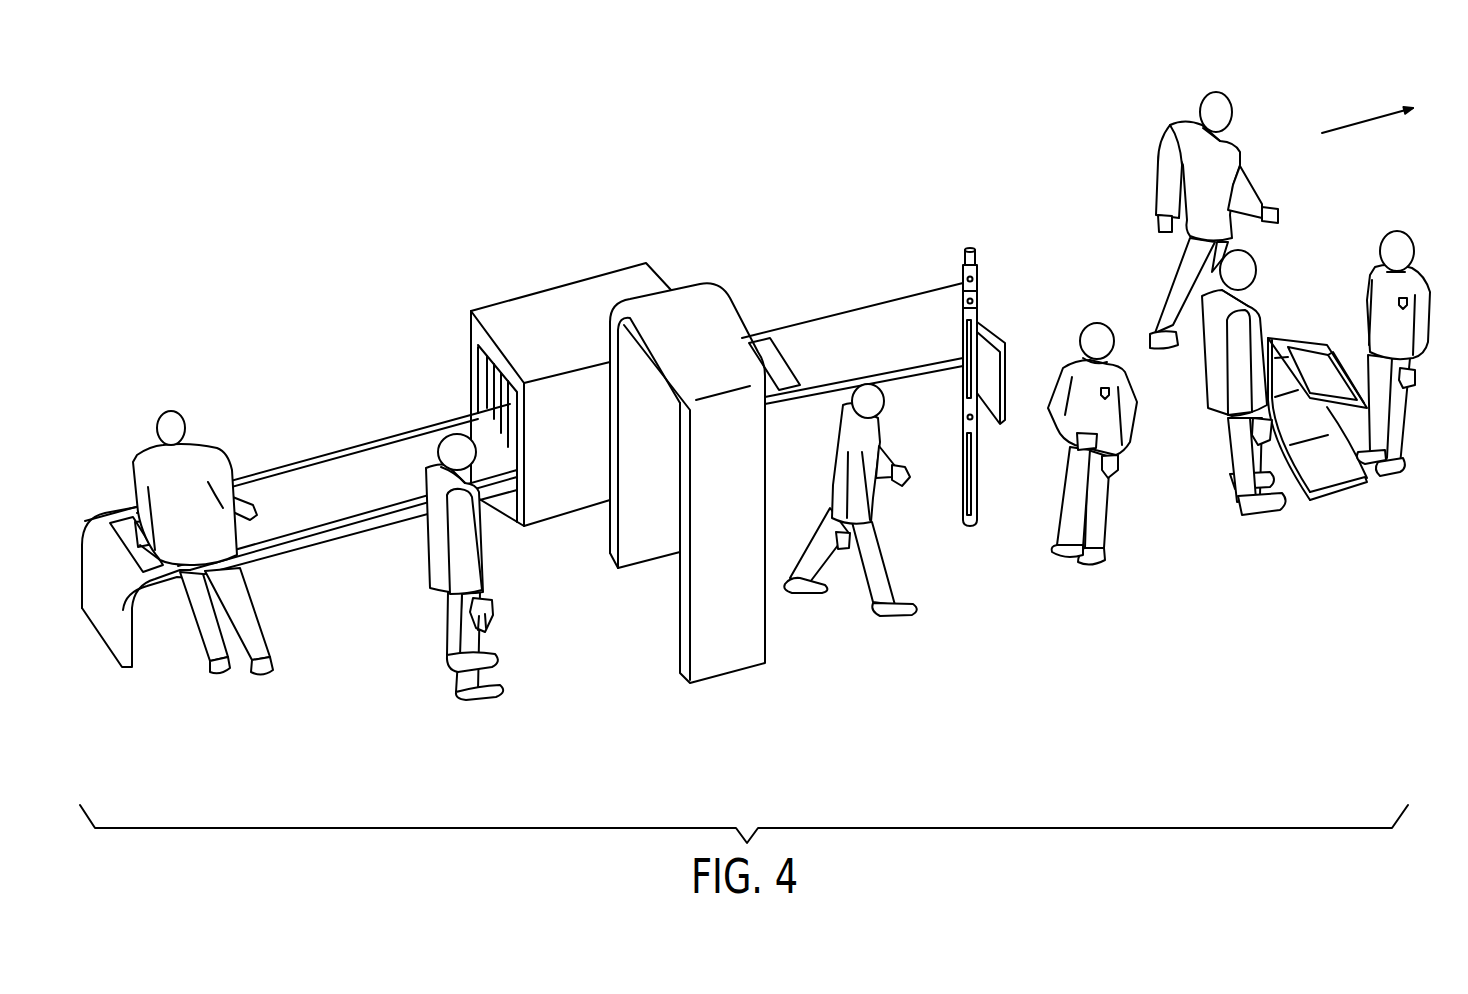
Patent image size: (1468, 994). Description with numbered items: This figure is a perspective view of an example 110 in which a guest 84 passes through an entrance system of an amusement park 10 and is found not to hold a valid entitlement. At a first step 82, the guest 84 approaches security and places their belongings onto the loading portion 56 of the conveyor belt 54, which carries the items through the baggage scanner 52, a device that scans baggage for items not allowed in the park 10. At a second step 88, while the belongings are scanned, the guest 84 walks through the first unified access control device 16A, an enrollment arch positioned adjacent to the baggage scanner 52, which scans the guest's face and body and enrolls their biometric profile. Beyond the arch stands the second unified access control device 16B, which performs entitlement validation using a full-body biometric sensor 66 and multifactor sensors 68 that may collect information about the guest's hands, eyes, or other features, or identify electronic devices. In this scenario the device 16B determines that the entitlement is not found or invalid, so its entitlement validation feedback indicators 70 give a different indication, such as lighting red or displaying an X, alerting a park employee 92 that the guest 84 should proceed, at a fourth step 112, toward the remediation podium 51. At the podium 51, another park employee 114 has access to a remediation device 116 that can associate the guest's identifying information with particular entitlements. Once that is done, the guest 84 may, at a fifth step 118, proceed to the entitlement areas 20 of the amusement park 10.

The amusement park 10 is at (1363, 96).
The entitlement areas 20 is at (1362, 122).
The example 110 is at (800, 158).
The first unified access control device 16A is at (703, 340).
The second unified access control device 16B is at (988, 369).
The remediation podium 51 is at (1322, 424).
The baggage scanner 52 is at (556, 282).
The conveyor belt 54 is at (350, 478).
The loading portion 56 is at (122, 498).
The full-body biometric sensor 66 is at (978, 279).
The multifactor sensors 68 is at (978, 301).
The entitlement validation feedback indicators 70 is at (962, 385).
The first step 82 is at (246, 697).
The guest 84 is at (207, 423).
The second step 88 is at (480, 712).
The park employee 92 is at (1112, 515).
The fourth step 112 is at (1257, 528).
The park employee 114 is at (1420, 281).
The remediation device 116 is at (1321, 364).
The fifth step 118 is at (1192, 342).